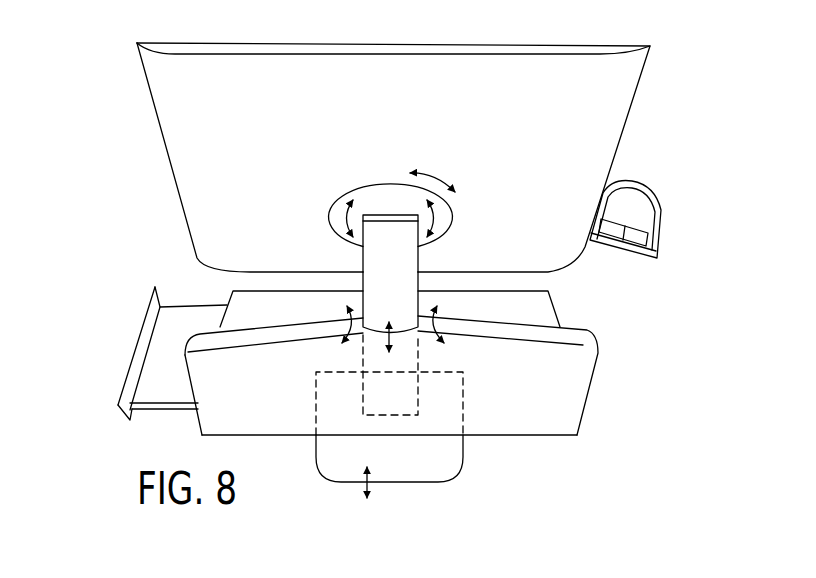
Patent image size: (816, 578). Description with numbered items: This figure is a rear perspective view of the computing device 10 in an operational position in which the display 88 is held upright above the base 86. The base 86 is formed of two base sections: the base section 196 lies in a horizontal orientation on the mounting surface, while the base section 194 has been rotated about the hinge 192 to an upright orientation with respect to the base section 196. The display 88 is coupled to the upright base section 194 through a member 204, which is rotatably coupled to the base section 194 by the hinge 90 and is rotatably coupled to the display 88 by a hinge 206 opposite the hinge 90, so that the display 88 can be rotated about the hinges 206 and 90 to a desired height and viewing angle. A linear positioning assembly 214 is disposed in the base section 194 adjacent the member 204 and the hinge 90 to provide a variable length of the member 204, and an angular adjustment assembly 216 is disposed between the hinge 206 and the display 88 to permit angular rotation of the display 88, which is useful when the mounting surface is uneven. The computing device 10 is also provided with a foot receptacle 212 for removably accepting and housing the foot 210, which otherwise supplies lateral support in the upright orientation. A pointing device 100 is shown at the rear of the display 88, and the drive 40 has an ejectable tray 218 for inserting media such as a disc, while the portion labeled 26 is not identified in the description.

The computing device 10 is at (694, 82).
The base housing 26 is at (198, 422).
The drive 40 is at (128, 421).
The base 86 is at (656, 370).
The display 88 is at (637, 98).
The hinge 90 is at (423, 327).
The pointing device 100 is at (661, 231).
The hinge 192 is at (596, 438).
The base section 194 is at (590, 397).
The base section 196 is at (556, 305).
The member 204 is at (362, 283).
The hinge 206 is at (392, 215).
The foot 210 is at (387, 481).
The foot receptacle 212 is at (463, 403).
The linear positioning assembly 214 is at (403, 403).
The angular adjustment assembly 216 is at (453, 208).
The tray 218 is at (135, 343).